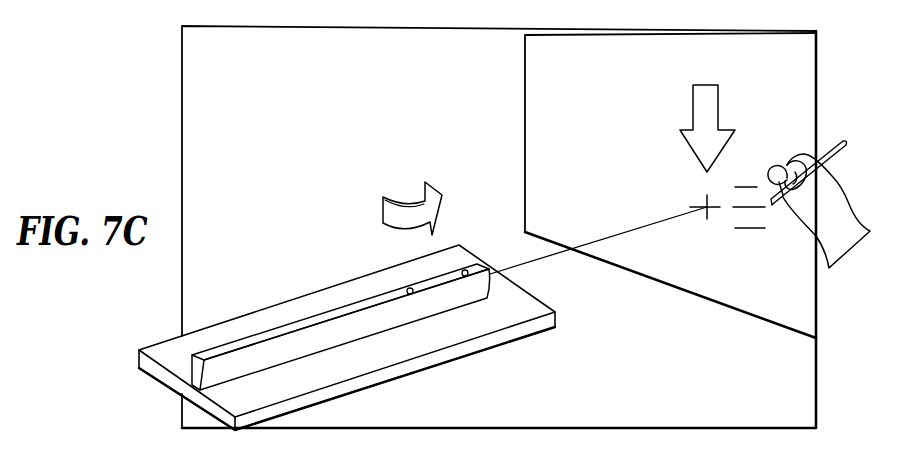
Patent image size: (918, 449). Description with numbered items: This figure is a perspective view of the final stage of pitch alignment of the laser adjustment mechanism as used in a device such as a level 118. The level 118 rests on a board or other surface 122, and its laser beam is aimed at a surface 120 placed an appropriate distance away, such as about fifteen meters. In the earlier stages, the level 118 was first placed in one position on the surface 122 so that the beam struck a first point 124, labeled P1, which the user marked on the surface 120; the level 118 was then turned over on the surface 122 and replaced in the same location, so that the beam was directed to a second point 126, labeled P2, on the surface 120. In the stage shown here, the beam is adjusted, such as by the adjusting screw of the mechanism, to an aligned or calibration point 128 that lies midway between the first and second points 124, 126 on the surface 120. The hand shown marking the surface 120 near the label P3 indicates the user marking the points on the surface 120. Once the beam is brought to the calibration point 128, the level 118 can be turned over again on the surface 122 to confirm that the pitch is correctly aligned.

The level 118 is at (325, 315).
The surface 120 is at (628, 109).
The board or other surface 122 is at (520, 317).
The first point 124 is at (707, 228).
The second point 126 is at (707, 185).
The aligned or calibration point 128 is at (707, 205).
The first point P1 is at (750, 244).
The second point P2 is at (746, 172).
The position mark P3 is at (819, 204).